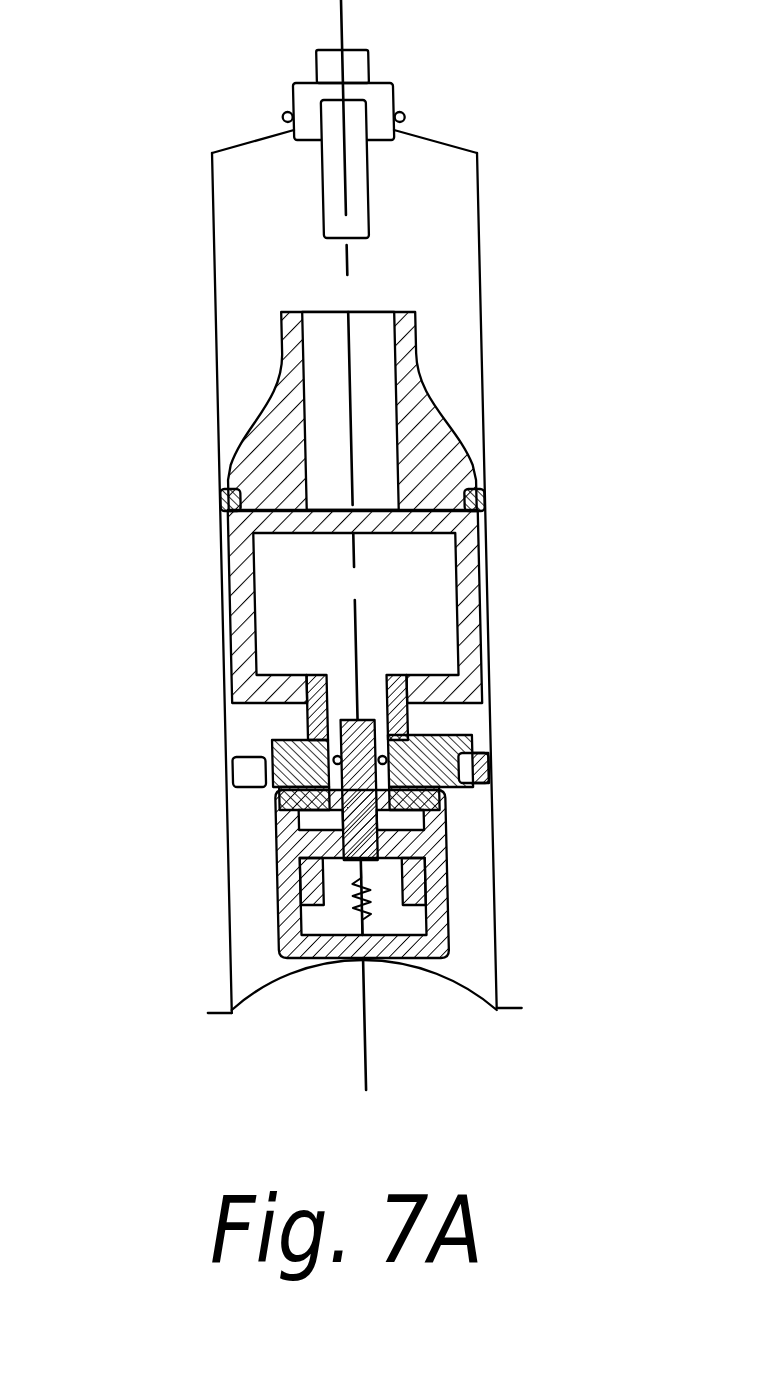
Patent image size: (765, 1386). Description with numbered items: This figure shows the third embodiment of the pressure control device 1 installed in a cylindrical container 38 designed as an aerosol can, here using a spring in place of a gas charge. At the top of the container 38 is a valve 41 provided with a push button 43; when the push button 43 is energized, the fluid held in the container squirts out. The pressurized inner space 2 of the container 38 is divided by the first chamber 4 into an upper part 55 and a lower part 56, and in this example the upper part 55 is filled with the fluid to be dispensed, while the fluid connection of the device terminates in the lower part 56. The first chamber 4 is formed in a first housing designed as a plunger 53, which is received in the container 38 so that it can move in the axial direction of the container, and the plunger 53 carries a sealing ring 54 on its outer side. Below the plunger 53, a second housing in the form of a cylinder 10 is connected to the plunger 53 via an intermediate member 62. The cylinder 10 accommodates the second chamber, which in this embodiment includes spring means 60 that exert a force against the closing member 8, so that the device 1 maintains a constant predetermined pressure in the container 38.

The pressure control device 1 is at (436, 356).
The inner space 2 is at (273, 251).
The first chamber 4 is at (399, 655).
The closing member 8 is at (427, 897).
The cylinder 10 is at (258, 945).
The container 38 is at (227, 337).
The valve 41 is at (370, 120).
The push button 43 is at (366, 62).
The plunger 53 is at (474, 587).
The sealing ring 54 is at (473, 497).
The upper part 55 is at (437, 257).
The lower part 56 is at (226, 918).
The spring means 60 is at (426, 935).
The intermediate member 62 is at (251, 728).